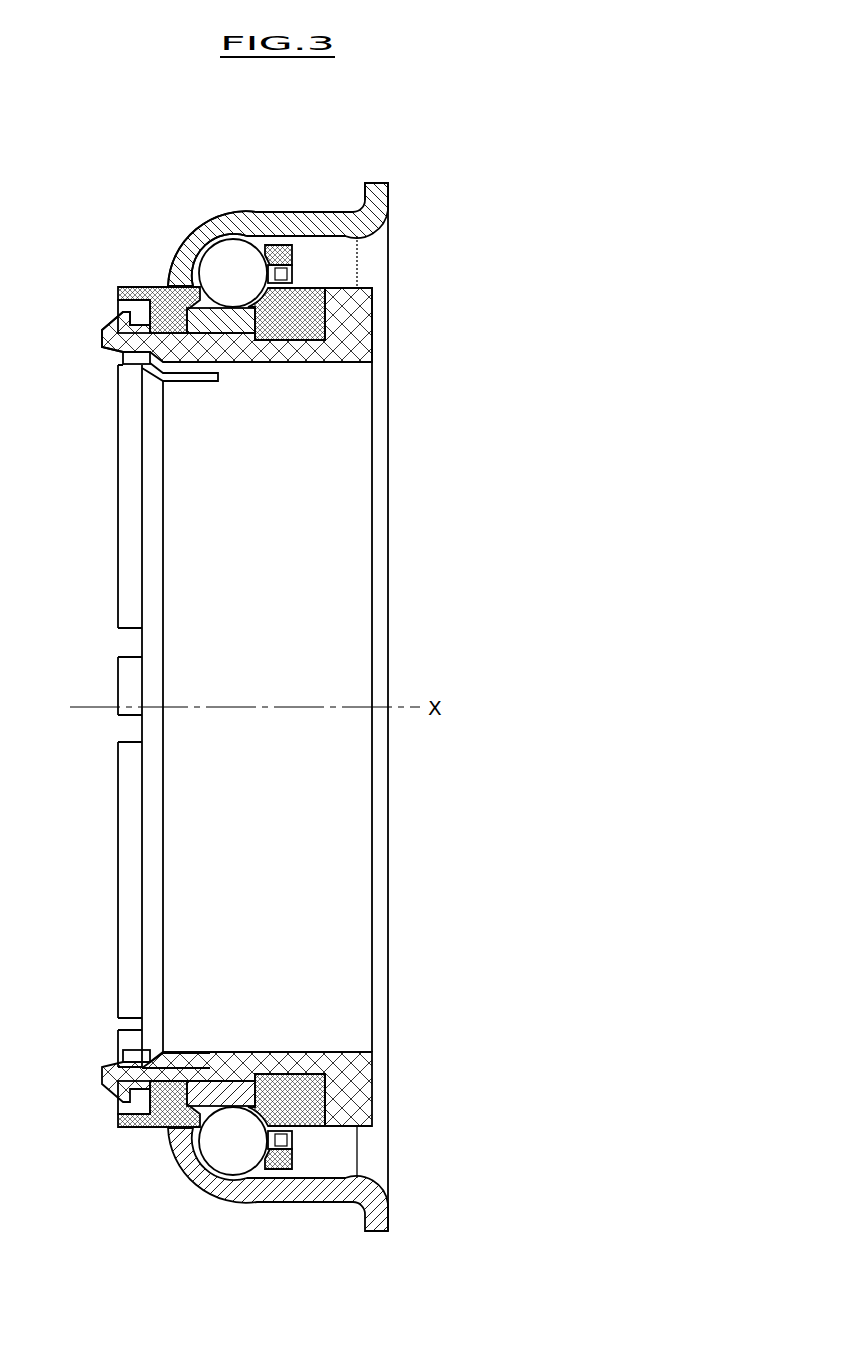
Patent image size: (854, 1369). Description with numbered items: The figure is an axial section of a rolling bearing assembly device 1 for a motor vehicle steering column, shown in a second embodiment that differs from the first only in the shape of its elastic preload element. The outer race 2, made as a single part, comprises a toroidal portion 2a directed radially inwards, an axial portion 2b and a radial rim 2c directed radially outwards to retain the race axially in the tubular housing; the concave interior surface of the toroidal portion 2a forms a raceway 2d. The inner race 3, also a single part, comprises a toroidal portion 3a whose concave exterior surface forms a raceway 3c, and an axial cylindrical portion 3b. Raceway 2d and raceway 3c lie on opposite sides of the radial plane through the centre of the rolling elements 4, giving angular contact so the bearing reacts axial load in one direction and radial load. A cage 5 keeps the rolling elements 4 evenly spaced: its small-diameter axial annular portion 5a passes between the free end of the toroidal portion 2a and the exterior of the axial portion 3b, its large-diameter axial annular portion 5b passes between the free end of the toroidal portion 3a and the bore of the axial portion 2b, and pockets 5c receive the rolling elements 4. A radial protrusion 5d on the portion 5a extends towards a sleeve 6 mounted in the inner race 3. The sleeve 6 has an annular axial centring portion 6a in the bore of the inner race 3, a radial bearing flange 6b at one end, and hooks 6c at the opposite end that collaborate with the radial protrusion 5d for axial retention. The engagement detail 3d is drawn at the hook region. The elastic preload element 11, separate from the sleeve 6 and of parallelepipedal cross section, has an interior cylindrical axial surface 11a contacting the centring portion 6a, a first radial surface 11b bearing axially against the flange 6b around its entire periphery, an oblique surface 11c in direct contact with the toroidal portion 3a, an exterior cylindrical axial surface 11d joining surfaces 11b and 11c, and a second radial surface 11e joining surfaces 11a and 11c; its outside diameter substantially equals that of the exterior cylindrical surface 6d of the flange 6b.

The rolling bearing assembly device 1 is at (440, 173).
The outer race 2 is at (282, 205).
The toroidal portion 2a is at (170, 272).
The axial portion 2b is at (343, 211).
The radial rim 2c is at (373, 183).
The raceway 2d is at (222, 258).
The inner race 3 is at (297, 275).
The toroidal portion 3a is at (265, 345).
The axial cylindrical portion 3b is at (207, 340).
The raceway 3c is at (243, 338).
The engagement projection of inner member 3d is at (128, 358).
The rolling elements 4 is at (240, 287).
The cage 5 is at (135, 278).
The small-diameter axial annular portion 5a is at (170, 285).
The large-diameter axial annular portion 5b is at (282, 266).
The pockets 5c is at (262, 250).
The radial protrusion 5d is at (150, 307).
The sleeve 6 is at (383, 341).
The annular axial centring portion 6a is at (303, 352).
The radial bearing flange 6b is at (358, 311).
The hooks 6c is at (150, 326).
The exterior cylindrical surface 6d is at (366, 292).
The elastic preload element 11 is at (325, 1052).
The interior cylindrical axial surface 11a is at (291, 1078).
The first radial surface 11b is at (327, 1098).
The oblique surface 11c is at (295, 1150).
The exterior cylindrical axial surface 11d is at (313, 1127).
The second radial surface 11e is at (240, 1078).